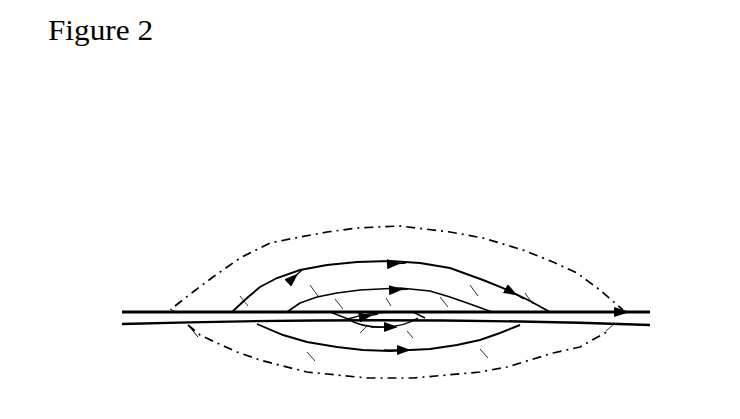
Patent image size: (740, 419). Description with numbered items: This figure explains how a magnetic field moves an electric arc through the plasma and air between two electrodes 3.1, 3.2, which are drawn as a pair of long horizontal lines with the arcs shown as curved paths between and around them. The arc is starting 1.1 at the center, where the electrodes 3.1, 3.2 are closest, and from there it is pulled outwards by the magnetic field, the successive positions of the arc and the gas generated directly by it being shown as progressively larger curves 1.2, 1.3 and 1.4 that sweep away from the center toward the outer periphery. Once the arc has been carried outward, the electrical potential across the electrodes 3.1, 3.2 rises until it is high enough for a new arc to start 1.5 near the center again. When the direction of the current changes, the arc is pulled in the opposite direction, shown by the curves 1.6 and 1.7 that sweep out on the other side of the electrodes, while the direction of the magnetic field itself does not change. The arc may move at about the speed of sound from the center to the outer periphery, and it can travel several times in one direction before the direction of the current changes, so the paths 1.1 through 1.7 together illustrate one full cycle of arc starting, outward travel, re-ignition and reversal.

The starting electric arc 1.1 is at (377, 308).
The electric arc pulled outwards (first stage) 1.2 is at (389, 297).
The electric arc pulled outwards (second stage) 1.3 is at (391, 284).
The electric arc pulled outwards (outermost stage) 1.4 is at (396, 261).
The new electric arc 1.5 is at (383, 330).
The electric arc pulled in opposite direction (first stage) 1.6 is at (388, 344).
The electric arc pulled in opposite direction (outer stage) 1.7 is at (401, 359).
The electrode 3.1 is at (373, 313).
The electrode 3.2 is at (397, 317).